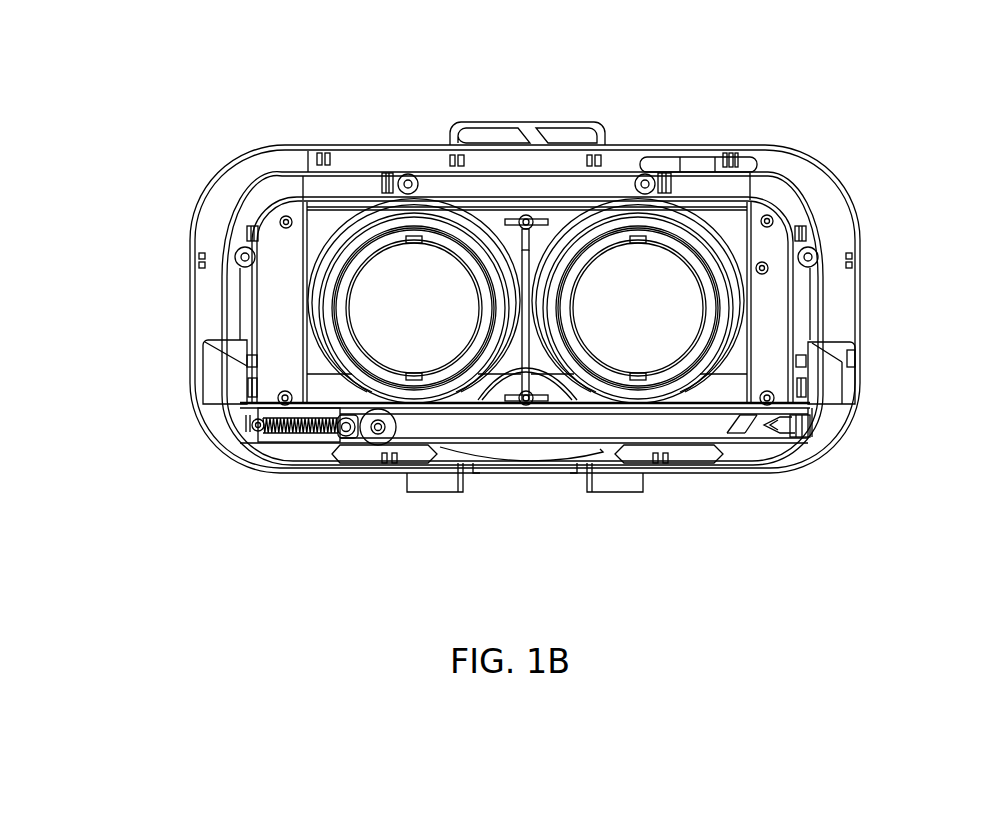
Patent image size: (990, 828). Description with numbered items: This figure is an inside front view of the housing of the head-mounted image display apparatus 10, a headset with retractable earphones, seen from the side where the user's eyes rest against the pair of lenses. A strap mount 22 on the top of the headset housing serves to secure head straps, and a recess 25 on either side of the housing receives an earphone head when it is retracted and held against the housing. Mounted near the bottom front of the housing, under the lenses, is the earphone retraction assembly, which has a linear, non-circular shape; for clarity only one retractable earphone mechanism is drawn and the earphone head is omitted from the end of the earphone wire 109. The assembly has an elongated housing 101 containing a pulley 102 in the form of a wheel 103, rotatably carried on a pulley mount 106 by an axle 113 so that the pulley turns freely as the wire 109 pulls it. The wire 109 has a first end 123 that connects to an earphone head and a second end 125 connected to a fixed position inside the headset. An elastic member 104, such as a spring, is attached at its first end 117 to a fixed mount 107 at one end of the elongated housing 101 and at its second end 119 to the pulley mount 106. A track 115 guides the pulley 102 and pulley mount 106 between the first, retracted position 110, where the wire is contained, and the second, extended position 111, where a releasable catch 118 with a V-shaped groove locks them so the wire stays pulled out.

The head-mounted image display apparatus 10 is at (878, 175).
The strap mount 22 is at (594, 135).
The recess 25 is at (222, 384).
The elongated housing 101 is at (578, 427).
The pulley 102 is at (366, 441).
The wheel 103 is at (374, 440).
The elastic member 104 is at (262, 445).
The pulley mount 106 is at (338, 433).
The fixed mount 107 is at (250, 426).
The earphone wire 109 is at (794, 438).
The first, retracted position 110 is at (390, 442).
The second, extended position 111 is at (812, 380).
The axle 113 is at (381, 442).
The track 115 is at (405, 441).
The first end of elastic member 117 is at (258, 443).
The releasable catch 118 is at (770, 428).
The second end of elastic member 119 is at (283, 435).
The first end of wire 123 is at (834, 438).
The second end of wire 125 is at (826, 408).